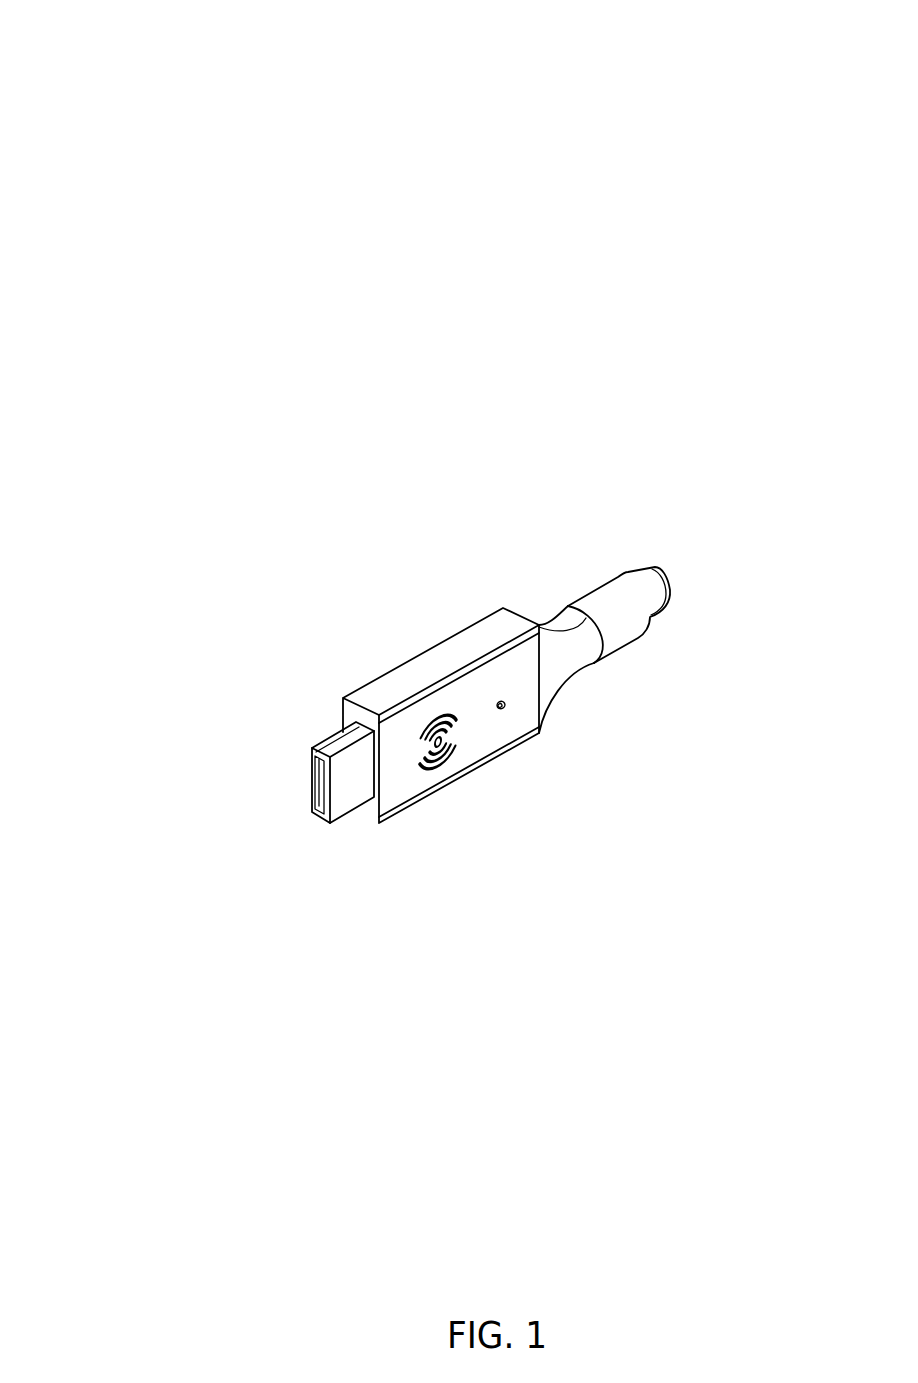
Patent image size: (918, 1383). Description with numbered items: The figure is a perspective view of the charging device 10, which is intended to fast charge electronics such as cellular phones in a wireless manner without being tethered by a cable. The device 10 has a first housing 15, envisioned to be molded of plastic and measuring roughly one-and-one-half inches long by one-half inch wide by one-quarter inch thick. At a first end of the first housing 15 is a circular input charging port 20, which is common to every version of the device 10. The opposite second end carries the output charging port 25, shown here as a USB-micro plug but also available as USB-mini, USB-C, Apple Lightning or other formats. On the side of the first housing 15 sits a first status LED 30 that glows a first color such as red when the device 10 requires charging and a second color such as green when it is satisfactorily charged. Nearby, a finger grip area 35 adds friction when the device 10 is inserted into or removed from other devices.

The charging device 10 is at (127, 186).
The first housing 15 is at (485, 732).
The input charging port 20 is at (651, 599).
The output charging port 25 is at (355, 785).
The first status LED 30 is at (500, 700).
The finger grip area 35 is at (424, 735).